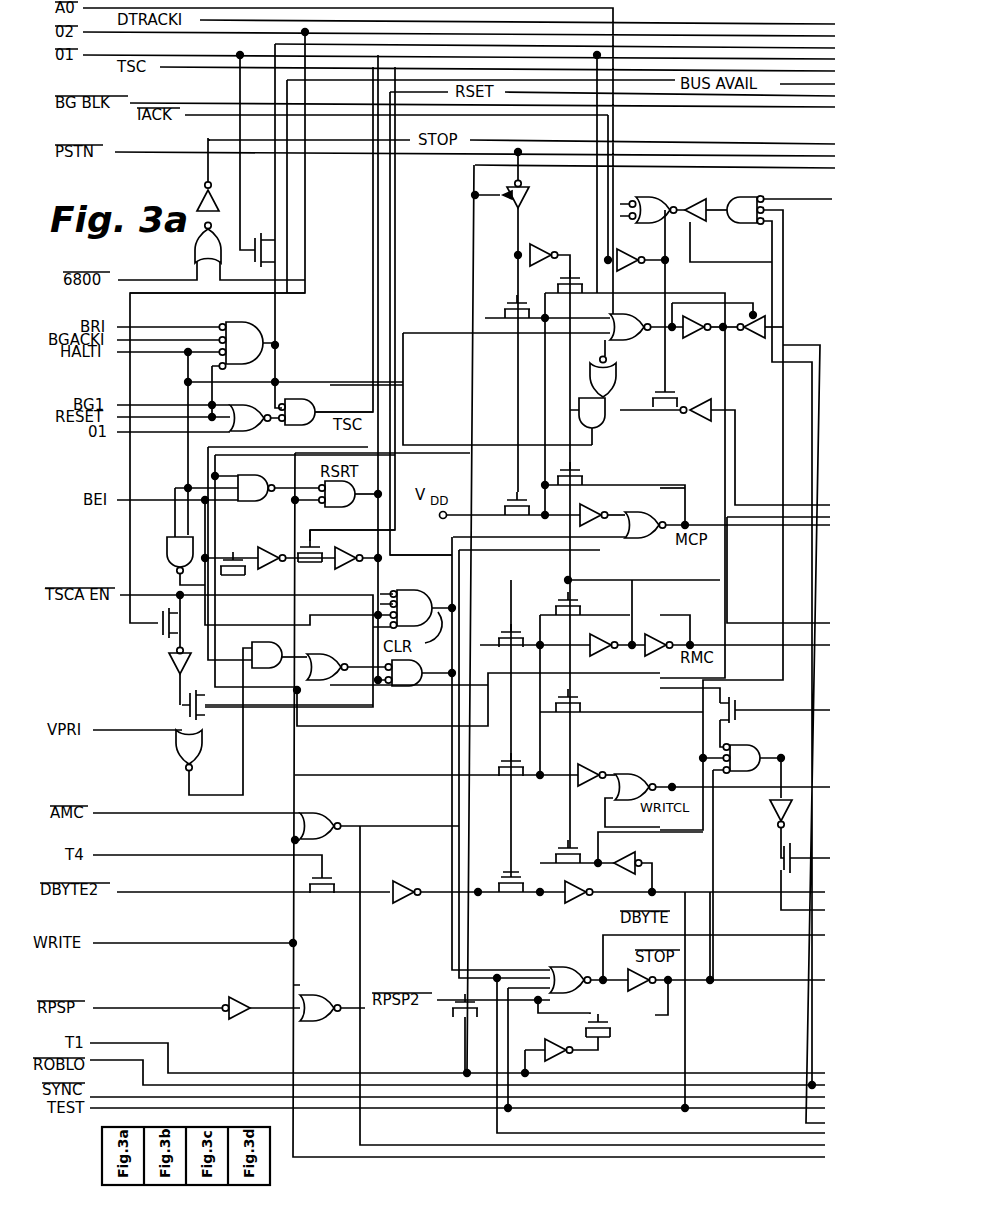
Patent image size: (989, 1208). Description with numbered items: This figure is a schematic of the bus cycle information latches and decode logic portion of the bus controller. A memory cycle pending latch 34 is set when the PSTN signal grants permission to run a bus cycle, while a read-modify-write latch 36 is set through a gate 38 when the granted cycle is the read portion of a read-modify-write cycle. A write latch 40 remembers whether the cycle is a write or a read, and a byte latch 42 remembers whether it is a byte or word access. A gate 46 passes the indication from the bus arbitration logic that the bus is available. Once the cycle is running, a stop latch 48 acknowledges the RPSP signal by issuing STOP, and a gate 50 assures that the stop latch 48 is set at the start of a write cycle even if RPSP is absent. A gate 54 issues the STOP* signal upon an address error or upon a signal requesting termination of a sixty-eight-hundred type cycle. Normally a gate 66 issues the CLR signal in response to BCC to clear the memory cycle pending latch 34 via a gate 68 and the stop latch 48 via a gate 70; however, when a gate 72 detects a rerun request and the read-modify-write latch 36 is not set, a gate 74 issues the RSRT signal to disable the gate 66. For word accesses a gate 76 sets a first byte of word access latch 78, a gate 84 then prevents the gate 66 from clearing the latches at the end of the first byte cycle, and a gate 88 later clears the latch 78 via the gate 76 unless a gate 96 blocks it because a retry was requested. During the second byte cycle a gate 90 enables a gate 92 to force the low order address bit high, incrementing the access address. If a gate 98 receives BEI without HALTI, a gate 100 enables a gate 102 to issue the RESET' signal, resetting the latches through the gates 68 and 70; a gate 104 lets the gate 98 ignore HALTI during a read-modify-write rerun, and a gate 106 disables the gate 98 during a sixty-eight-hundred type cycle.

The memory cycle pending (MCP) latch 34 is at (668, 476).
The read-modify-write (RMC) latch 36 is at (705, 628).
The gate 38 is at (320, 812).
The write (WRITEL) latch 40 is at (647, 759).
The byte (DBYTE) latch 42 is at (652, 860).
The gate 46 is at (249, 326).
The stop (STOP) latch 48 is at (636, 1035).
The gate 50 is at (325, 992).
The gate 54 is at (192, 252).
The gate 66 is at (416, 590).
The gate 68 is at (645, 540).
The gate 70 is at (576, 967).
The gate 72 is at (250, 504).
The gate 74 is at (328, 510).
The gate 76 is at (627, 342).
The first byte of word access (FBWA) latch 78 is at (698, 346).
The gate 84 is at (747, 745).
The gate 88 is at (620, 376).
The gate 90 is at (736, 220).
The gate 92 is at (652, 203).
The gate 96 is at (607, 426).
The gate 98 is at (270, 644).
The gate 100 is at (328, 655).
The gate 102 is at (407, 690).
The gate 104 is at (167, 540).
The gate 106 is at (172, 752).